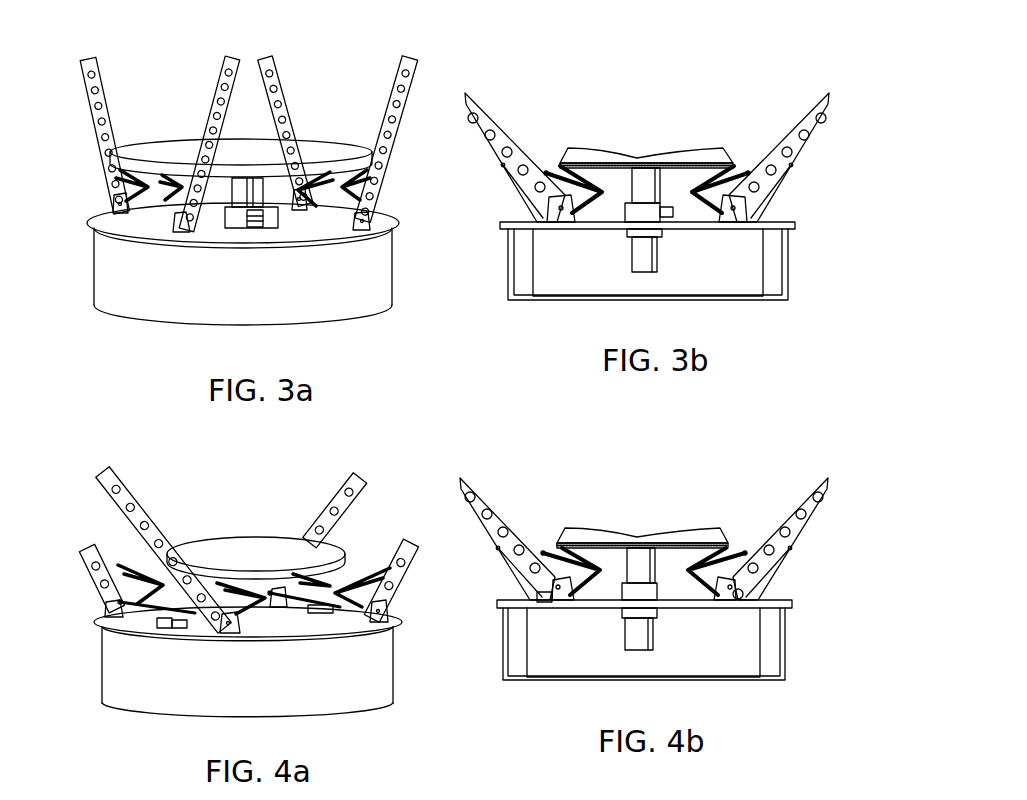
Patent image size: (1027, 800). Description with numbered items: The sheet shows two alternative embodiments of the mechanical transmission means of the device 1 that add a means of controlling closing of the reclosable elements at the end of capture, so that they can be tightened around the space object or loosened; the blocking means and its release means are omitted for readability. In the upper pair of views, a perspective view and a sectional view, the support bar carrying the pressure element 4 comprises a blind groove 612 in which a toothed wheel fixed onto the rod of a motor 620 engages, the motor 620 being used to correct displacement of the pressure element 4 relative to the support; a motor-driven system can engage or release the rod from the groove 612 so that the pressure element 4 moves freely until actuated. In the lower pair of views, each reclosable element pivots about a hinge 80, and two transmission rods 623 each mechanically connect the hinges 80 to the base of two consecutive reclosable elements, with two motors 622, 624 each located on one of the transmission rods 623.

In FIG. 3a, the device 1 is at (321, 112).
In FIG. 3b, the device 1 is at (666, 115).
In FIG. 4a, the device 1 is at (255, 512).
In FIG. 4b, the device 1 is at (661, 495).
In FIG. 3a, the pressure element 4 is at (245, 170).
In FIG. 3b, the pressure element 4 is at (627, 160).
In FIG. 4a, the pressure element 4 is at (256, 558).
In FIG. 4b, the pressure element 4 is at (603, 540).
In FIG. 3b, the hinge 80 is at (735, 210).
In FIG. 3a, the blind groove 612 is at (245, 195).
In FIG. 3b, the blind groove 612 is at (642, 192).
In FIG. 3a, the motor 620 is at (273, 218).
In FIG. 3b, the motor 620 is at (670, 218).
In FIG. 4a, the motor 622 is at (180, 623).
In FIG. 4b, the motor 622 is at (550, 588).
In FIG. 4a, the transmission rods 623 is at (143, 607).
In FIG. 4a, the motor 624 is at (340, 615).
In FIG. 4b, the motor 624 is at (742, 598).